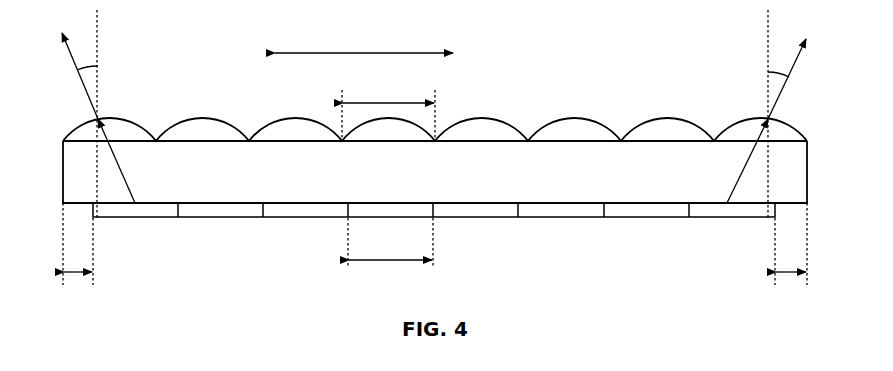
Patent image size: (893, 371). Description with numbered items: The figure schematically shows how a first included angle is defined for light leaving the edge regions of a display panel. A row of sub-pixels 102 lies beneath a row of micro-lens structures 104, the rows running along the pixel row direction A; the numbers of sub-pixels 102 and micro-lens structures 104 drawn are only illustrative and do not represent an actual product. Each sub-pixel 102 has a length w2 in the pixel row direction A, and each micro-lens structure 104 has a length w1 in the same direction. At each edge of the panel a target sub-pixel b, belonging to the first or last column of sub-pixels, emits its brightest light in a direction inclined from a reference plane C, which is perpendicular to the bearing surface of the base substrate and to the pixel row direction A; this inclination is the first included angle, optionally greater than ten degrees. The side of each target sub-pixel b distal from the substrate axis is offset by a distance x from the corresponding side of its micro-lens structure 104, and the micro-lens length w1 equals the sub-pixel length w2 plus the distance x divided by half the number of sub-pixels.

The sub-pixels 102 is at (550, 206).
The micro-lens structures 104 is at (565, 136).
The reference plane C is at (99, 78).
The pixel row direction A is at (378, 54).
The length of each micro-lens structure w1 is at (388, 112).
The length of each sub-pixel w2 is at (390, 243).
The distance x is at (435, 244).
The target sub-pixel b is at (135, 208).